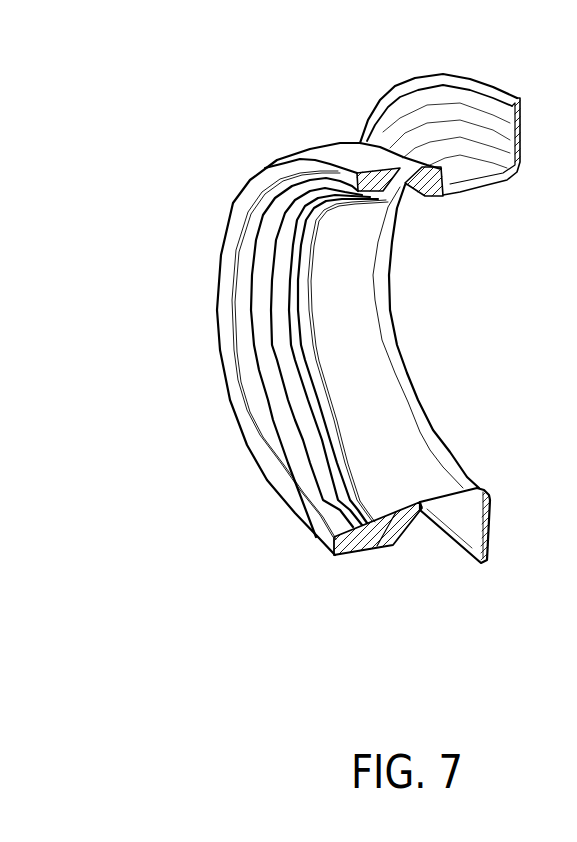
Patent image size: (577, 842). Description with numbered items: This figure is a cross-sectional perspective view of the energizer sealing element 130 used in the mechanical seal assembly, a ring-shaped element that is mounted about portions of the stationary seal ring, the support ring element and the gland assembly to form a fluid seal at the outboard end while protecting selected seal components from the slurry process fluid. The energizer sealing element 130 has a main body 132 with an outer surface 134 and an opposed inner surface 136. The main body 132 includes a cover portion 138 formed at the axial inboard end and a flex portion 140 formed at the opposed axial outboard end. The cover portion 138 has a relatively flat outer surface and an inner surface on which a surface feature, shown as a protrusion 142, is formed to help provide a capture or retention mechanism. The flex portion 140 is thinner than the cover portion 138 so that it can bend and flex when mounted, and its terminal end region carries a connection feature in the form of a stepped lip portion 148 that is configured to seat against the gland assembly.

The energizer sealing element 130 is at (167, 207).
The main body 132 is at (343, 157).
The outer surface 134 is at (372, 556).
The inner surface 136 is at (366, 378).
The cover portion 138 is at (305, 143).
The flex portion 140 is at (400, 80).
The protrusion 142 is at (367, 530).
The stepped lip portion 148 is at (489, 547).